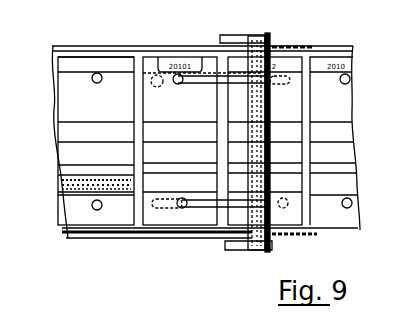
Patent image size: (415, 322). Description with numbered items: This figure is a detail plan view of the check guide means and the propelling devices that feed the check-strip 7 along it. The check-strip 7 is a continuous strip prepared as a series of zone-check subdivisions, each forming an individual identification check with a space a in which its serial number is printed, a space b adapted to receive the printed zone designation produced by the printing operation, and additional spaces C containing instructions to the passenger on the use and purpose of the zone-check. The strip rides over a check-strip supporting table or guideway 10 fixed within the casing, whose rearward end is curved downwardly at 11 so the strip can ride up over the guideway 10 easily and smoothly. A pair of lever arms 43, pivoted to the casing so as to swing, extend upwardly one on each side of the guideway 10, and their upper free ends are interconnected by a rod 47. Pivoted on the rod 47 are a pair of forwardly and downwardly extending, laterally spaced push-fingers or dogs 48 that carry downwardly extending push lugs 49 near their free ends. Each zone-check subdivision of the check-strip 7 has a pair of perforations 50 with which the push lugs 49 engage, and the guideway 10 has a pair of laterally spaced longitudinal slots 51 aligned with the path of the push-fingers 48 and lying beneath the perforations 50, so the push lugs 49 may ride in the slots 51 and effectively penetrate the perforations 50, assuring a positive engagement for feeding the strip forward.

The check-strip supporting table or guideway 10 is at (91, 50).
The check-strip 7 is at (72, 217).
The serial number space a is at (67, 67).
The zone designation space b is at (72, 107).
The instruction spaces C is at (62, 175).
The downwardly curved rearward end 11 is at (313, 48).
The lever arms 43 is at (253, 36).
The rod 47 is at (263, 35).
The push-fingers or dogs 48 is at (202, 76).
The push lugs 49 is at (181, 84).
The perforations 50 is at (102, 78).
The slots 51 is at (155, 87).